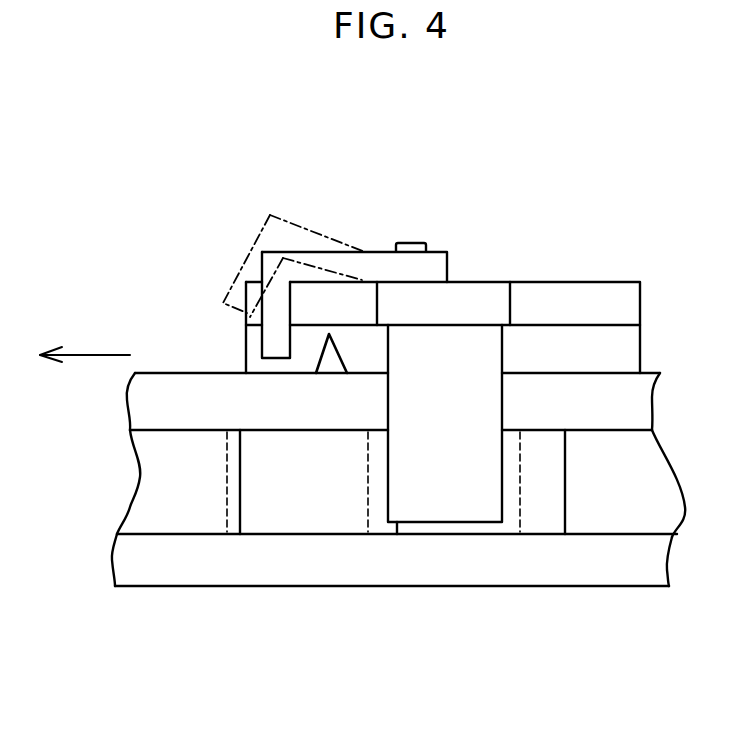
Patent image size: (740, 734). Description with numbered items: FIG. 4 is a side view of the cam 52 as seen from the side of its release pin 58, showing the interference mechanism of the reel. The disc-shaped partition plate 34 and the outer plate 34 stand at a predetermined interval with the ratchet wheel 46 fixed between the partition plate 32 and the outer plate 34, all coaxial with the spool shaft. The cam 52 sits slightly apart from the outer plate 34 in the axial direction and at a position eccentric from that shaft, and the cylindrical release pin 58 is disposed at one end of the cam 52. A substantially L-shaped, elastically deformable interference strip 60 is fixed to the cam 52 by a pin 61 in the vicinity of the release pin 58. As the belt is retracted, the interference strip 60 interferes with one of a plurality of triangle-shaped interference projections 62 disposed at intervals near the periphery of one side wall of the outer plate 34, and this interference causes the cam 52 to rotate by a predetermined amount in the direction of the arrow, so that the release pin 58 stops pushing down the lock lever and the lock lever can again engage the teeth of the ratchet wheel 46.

The partition plate 32 is at (175, 568).
The outer plate 34 is at (183, 388).
The ratchet wheel 46 is at (153, 488).
The cam 52 is at (597, 282).
The release pin 58 is at (432, 498).
The interference strip 60 is at (447, 270).
The pin 61 is at (411, 243).
The interference projections 62 is at (329, 358).